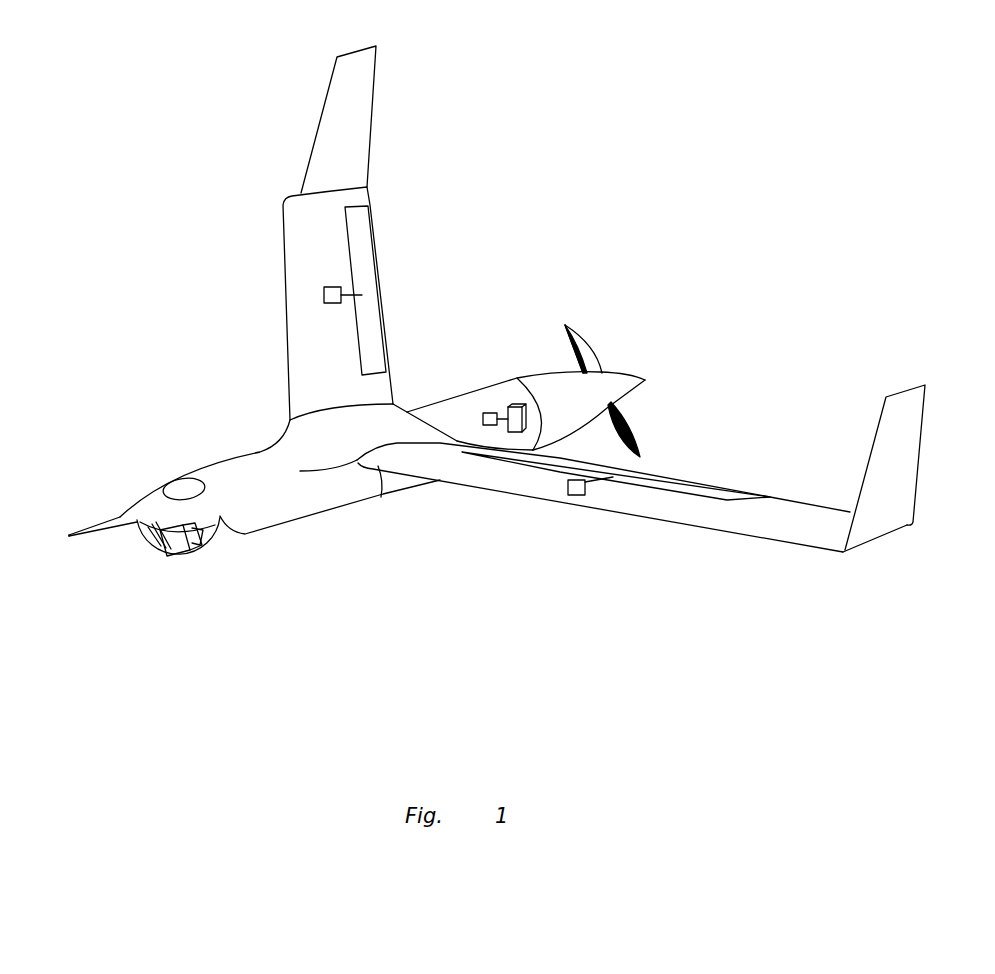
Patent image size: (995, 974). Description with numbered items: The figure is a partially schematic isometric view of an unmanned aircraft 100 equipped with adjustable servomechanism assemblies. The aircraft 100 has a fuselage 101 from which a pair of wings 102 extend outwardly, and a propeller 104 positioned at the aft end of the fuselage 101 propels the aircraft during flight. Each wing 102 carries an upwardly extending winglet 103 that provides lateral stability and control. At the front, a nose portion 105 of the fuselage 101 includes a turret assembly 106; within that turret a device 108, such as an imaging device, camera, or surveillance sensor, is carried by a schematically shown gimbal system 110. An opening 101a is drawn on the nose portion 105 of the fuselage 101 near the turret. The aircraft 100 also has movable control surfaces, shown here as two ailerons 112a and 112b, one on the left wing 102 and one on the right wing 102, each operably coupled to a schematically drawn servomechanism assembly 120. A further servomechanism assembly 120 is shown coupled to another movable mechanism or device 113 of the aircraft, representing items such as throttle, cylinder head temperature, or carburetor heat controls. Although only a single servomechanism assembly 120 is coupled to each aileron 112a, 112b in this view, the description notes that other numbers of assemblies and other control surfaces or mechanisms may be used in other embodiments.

The unmanned aircraft 100 is at (590, 128).
The fuselage 101 is at (413, 496).
The opening in fuselage 101a is at (200, 478).
The wing 102 is at (312, 251).
The winglet 103 is at (306, 117).
The propeller 104 is at (583, 348).
The nose portion 105 is at (138, 478).
The turret assembly 106 is at (136, 558).
The device 108 is at (166, 556).
The gimbal system 110 is at (217, 548).
The aileron 112a is at (375, 333).
The aileron 112b is at (657, 478).
The movable mechanism or device 113 is at (510, 407).
The servomechanism assembly 120 is at (324, 292).